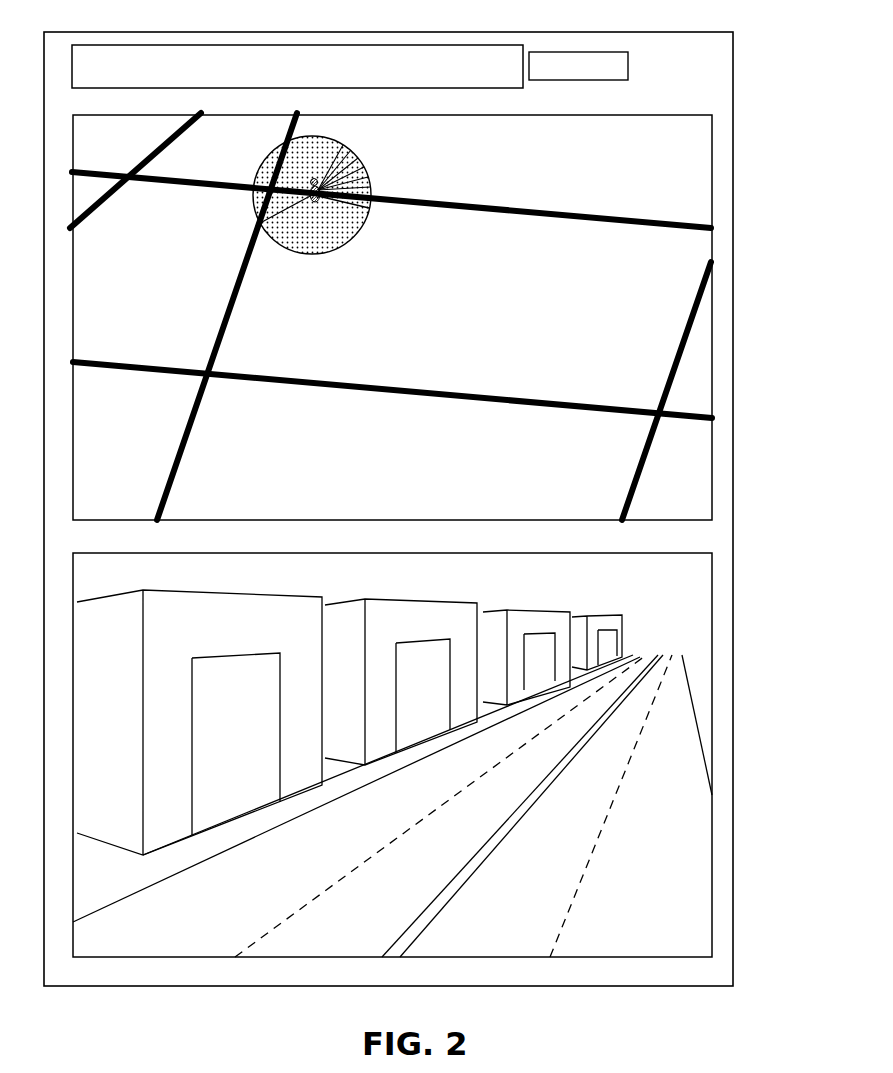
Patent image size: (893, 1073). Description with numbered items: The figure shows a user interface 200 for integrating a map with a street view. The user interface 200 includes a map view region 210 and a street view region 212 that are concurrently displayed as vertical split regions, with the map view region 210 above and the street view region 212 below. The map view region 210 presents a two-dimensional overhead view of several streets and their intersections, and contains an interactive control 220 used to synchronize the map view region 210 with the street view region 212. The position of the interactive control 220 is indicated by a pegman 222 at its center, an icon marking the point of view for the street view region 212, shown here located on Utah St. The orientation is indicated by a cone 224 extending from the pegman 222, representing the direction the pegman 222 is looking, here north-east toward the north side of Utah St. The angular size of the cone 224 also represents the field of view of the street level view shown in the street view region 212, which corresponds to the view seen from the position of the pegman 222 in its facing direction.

The user interface 200 is at (733, 52).
The map view region 210 is at (430, 316).
The street view region 212 is at (712, 658).
The interactive control 220 is at (341, 255).
The pegman 222 is at (262, 222).
The cone 224 is at (347, 136).